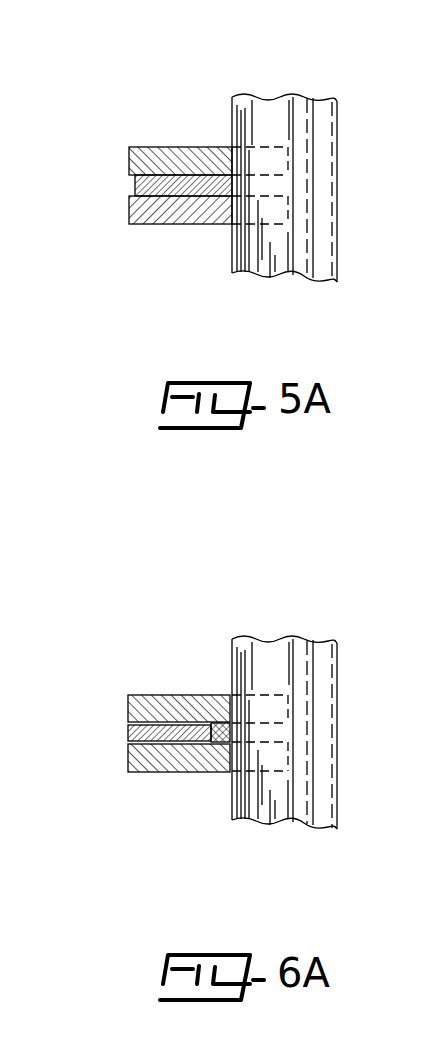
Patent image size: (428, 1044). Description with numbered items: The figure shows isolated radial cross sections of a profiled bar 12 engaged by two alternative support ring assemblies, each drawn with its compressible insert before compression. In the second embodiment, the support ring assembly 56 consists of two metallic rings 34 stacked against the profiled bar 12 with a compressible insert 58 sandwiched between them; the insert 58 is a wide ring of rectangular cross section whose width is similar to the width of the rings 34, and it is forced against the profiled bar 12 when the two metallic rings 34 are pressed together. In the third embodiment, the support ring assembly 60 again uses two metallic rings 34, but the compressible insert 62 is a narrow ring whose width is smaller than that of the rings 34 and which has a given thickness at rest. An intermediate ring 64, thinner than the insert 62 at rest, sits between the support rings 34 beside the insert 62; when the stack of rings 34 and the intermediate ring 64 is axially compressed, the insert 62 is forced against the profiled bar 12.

In FIG. 5A, the profiled bar 12 is at (268, 106).
In FIG. 6A, the profiled bar 12 is at (267, 660).
In FIG. 5A, the metallic ring 34 is at (129, 160).
In FIG. 6A, the metallic ring 34 is at (157, 700).
In FIG. 5A, the support ring assembly 56 is at (163, 132).
In FIG. 5A, the compressible insert 58 is at (135, 185).
In FIG. 6A, the support ring assembly 60 is at (111, 692).
In FIG. 6A, the compressible insert 62 is at (219, 696).
In FIG. 6A, the intermediate ring 64 is at (128, 733).